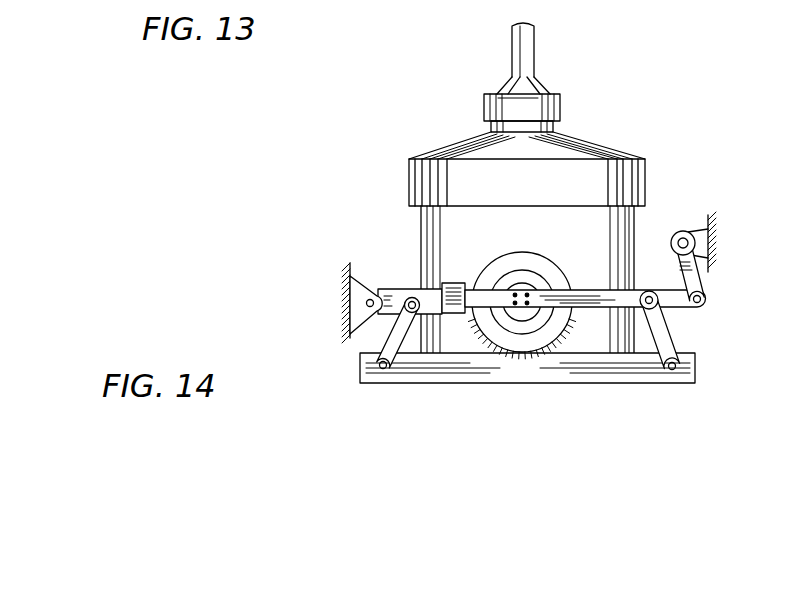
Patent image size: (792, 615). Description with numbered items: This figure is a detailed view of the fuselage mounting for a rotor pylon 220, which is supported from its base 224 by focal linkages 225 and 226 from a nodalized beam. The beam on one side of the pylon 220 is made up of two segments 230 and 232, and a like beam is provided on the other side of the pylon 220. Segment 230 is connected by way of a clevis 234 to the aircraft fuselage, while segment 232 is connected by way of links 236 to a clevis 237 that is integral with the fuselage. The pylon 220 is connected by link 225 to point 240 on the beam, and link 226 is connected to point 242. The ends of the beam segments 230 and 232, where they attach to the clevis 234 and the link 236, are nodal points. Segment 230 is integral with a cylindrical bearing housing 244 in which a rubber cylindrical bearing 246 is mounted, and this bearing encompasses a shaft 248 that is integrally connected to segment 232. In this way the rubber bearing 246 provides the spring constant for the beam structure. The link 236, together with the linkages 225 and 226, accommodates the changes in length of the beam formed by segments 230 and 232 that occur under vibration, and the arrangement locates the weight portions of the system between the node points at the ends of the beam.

The pylon 220 is at (617, 148).
The base 224 is at (545, 383).
The focal linkage 225 is at (667, 343).
The focal linkage 226 is at (386, 337).
The beam segment 230 is at (395, 292).
The beam segment 232 is at (595, 297).
The clevis 234 is at (355, 307).
The link 236 is at (697, 282).
The clevis 237 is at (712, 242).
The point 240 is at (660, 305).
The point 242 is at (413, 310).
The cylindrical bearing housing 244 is at (512, 262).
The rubber cylindrical bearing 246 is at (528, 275).
The shaft 248 is at (528, 315).